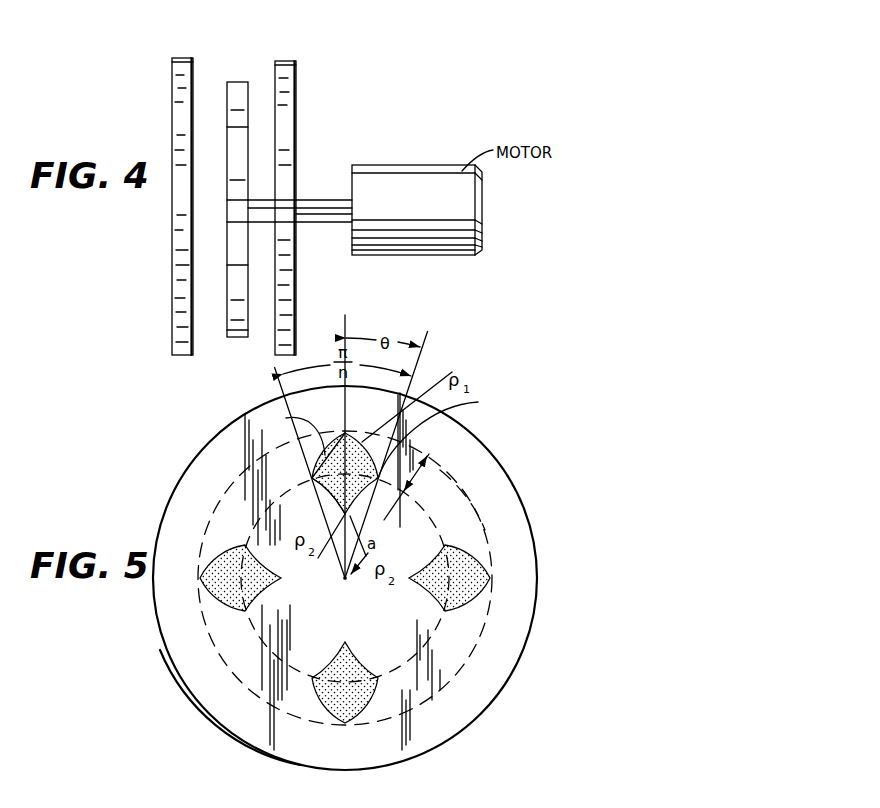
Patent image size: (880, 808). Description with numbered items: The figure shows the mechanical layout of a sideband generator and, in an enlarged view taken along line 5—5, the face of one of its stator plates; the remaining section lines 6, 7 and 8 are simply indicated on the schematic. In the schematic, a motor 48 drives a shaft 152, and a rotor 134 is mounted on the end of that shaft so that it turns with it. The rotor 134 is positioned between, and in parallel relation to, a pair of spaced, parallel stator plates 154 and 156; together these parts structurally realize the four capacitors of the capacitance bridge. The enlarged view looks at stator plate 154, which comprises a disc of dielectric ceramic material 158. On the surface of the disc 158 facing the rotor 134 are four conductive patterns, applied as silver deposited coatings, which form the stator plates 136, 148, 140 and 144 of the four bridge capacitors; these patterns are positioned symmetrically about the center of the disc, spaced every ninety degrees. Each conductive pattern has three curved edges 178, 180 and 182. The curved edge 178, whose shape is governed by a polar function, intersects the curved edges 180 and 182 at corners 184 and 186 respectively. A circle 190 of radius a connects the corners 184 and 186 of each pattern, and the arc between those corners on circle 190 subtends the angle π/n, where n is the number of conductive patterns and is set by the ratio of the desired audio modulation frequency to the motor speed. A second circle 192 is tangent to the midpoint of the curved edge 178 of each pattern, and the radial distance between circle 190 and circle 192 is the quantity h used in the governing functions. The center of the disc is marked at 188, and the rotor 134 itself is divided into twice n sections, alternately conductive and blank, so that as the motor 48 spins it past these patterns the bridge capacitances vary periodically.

In FIG. 4, the line 5— 5 is at (197, 15).
In FIG. 4, the section line 6- 6 is at (255, 70).
In FIG. 4, the section line 7- 7 is at (260, 282).
In FIG. 4, the section line 8- 8 is at (269, 18).
In FIG. 4, the motor 48 is at (385, 181).
In FIG. 4, the rotor 134 is at (228, 203).
In FIG. 5, the stator plate of capacitor C1 136 is at (460, 566).
In FIG. 5, the stator plate of capacitor C3 140 is at (357, 670).
In FIG. 5, the stator plate of capacitor C4 144 is at (354, 434).
In FIG. 5, the stator plate of capacitor C2 148 is at (241, 594).
In FIG. 4, the shaft 152 is at (313, 198).
In FIG. 4, the stator plate 154 is at (172, 268).
In FIG. 5, the stator plate 154 is at (157, 516).
In FIG. 4, the stator plate 156 is at (297, 277).
In FIG. 5, the dielectric ceramic disc 158 is at (238, 710).
In FIG. 5, the curved edge 178 is at (289, 434).
In FIG. 5, the curved edge 180 is at (331, 500).
In FIG. 5, the curved edge 182 is at (386, 522).
In FIG. 5, the corner 184 is at (311, 479).
In FIG. 5, the corner 186 is at (478, 402).
In FIG. 5, the rotor center 188 is at (323, 574).
In FIG. 5, the circle 190 is at (251, 533).
In FIG. 5, the circle 192 is at (458, 480).